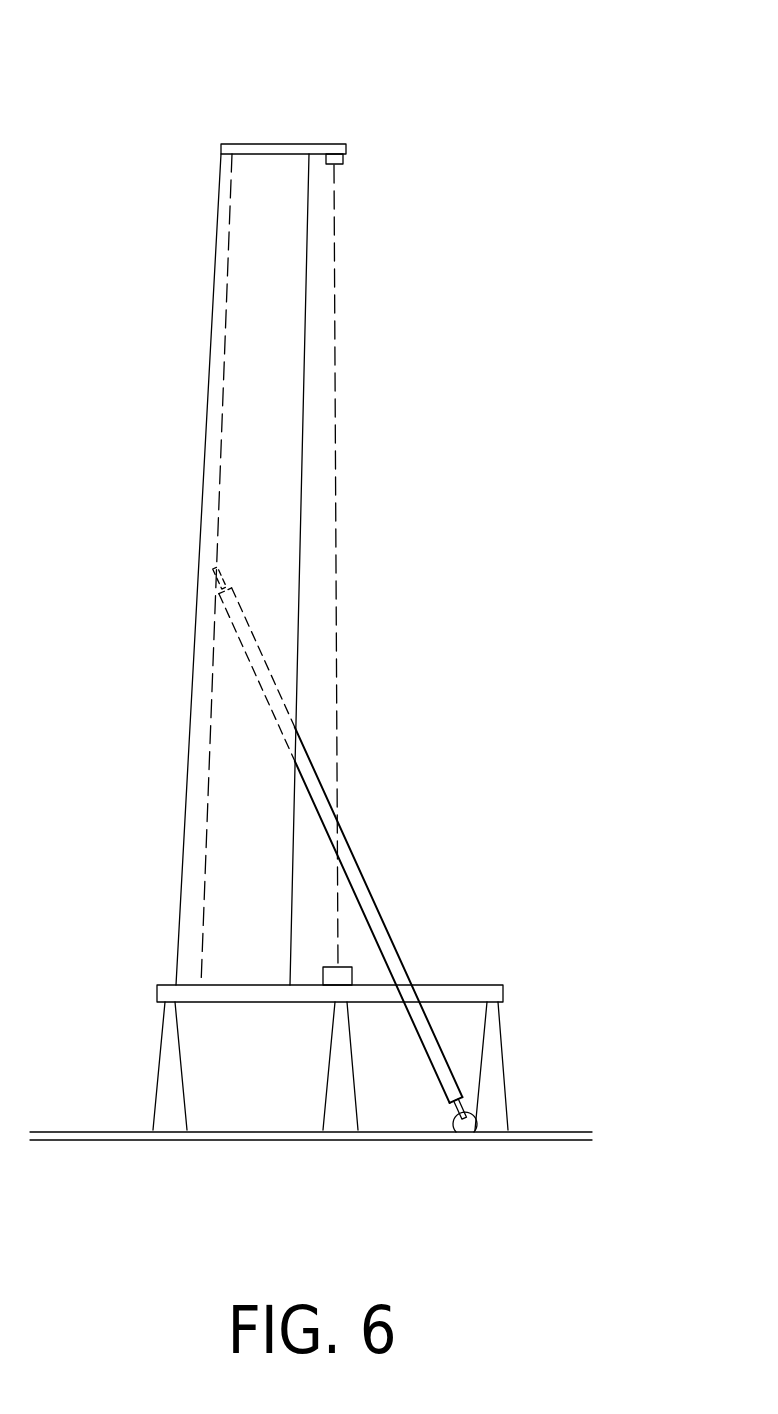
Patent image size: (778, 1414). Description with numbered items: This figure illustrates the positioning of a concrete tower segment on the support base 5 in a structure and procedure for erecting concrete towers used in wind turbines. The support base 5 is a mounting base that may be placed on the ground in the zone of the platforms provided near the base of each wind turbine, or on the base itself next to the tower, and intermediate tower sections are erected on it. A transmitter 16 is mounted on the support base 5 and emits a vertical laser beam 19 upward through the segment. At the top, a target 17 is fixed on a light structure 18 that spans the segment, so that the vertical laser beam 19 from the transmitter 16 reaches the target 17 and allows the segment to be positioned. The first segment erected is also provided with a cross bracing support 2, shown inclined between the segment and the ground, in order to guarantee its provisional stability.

The cross bracing support 2 is at (372, 917).
The support base 5 is at (482, 993).
The transmitter 16 is at (335, 977).
The target 17 is at (343, 160).
The light structure 18 is at (255, 149).
The vertical laser beam 19 is at (290, 569).